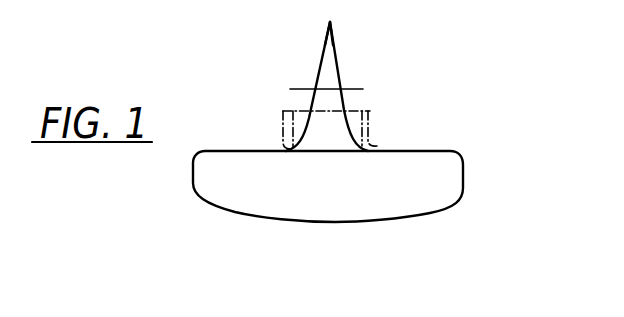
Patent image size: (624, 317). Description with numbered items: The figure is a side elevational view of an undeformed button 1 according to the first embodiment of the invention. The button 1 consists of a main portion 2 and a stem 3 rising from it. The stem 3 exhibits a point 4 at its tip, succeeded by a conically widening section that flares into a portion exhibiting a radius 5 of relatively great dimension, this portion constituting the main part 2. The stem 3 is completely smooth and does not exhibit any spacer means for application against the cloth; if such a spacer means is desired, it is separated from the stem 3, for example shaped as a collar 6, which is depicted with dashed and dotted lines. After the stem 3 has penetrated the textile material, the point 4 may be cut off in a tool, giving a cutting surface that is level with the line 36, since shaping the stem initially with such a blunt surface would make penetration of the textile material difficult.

The button 1 is at (423, 135).
The main portion 2 is at (445, 179).
The stem 3 is at (328, 100).
The point 4 is at (330, 22).
The radius 5 is at (303, 138).
The collar 6 is at (375, 127).
The line 36 is at (297, 89).